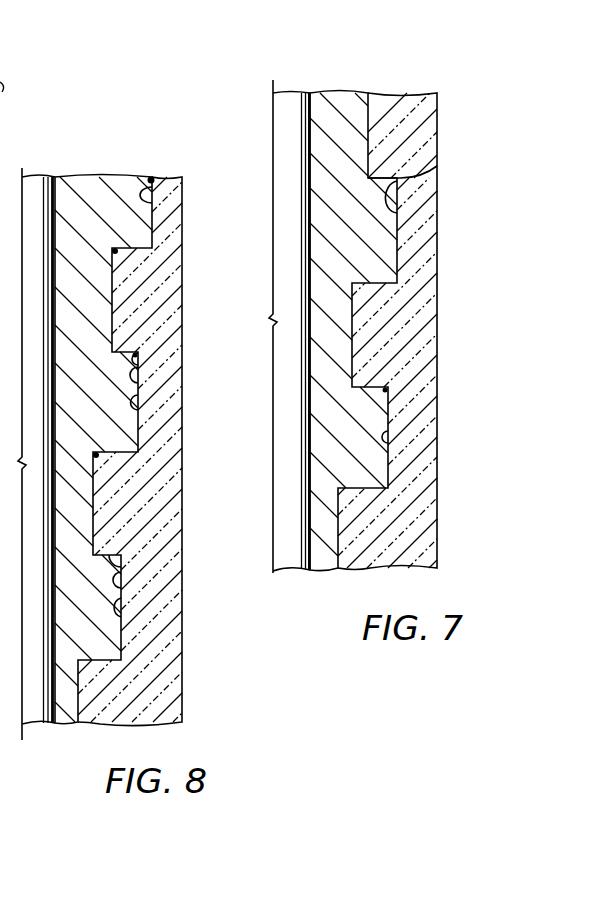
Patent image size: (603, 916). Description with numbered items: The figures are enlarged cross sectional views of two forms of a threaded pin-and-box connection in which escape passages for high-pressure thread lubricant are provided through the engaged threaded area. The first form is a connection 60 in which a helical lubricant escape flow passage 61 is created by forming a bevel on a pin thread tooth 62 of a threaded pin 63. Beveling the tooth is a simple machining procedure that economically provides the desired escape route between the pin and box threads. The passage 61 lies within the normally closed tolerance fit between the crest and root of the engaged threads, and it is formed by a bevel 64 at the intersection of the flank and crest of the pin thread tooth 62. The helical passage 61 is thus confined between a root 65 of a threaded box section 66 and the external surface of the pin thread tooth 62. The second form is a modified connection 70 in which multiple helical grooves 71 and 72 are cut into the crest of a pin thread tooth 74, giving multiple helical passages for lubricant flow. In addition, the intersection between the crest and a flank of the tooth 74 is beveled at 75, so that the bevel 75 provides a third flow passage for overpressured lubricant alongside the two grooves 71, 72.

In FIG. 7, the connection 60 is at (433, 66).
In FIG. 7, the helical lubricant escape flow passage 61 is at (400, 178).
In FIG. 7, the pin thread tooth 62 is at (378, 257).
In FIG. 7, the threaded pin 63 is at (323, 182).
In FIG. 7, the bevel 64 is at (386, 212).
In FIG. 7, the root 65 is at (386, 440).
In FIG. 7, the threaded box section 66 is at (430, 127).
In FIG. 8, the modified form of the invention 70 is at (113, 148).
In FIG. 8, the helical groove 71 is at (138, 370).
In FIG. 8, the helical groove 72 is at (138, 400).
In FIG. 8, the pin thread tooth 74 is at (120, 436).
In FIG. 8, the bevel 75 is at (140, 357).